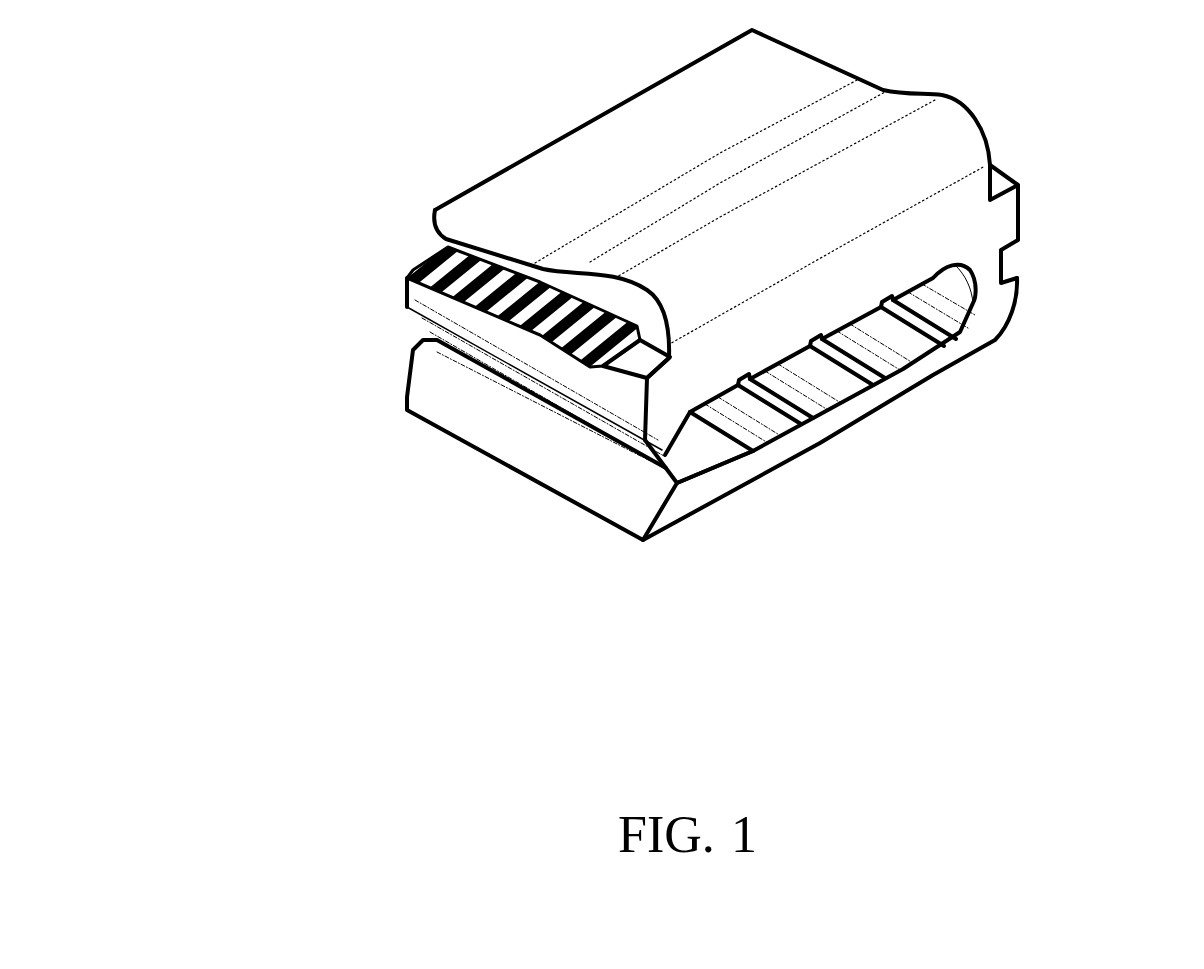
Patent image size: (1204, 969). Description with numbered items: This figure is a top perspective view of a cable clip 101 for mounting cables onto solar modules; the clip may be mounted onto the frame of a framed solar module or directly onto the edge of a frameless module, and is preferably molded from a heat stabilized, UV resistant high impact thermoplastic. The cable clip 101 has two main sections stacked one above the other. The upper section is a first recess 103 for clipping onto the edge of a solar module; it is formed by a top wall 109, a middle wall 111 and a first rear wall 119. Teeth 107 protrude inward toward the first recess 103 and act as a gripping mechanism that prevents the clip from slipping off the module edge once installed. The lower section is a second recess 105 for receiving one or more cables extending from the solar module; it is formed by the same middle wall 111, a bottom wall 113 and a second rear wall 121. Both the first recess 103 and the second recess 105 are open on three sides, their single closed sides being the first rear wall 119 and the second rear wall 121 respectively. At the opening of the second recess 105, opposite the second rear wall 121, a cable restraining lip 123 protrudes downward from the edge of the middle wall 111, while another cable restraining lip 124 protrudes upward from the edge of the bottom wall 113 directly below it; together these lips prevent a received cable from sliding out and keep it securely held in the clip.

The cable clip 101 is at (314, 570).
The first recess 103 is at (415, 248).
The second recess 105 is at (946, 311).
The teeth 107 is at (495, 303).
The top wall 109 is at (696, 165).
The middle wall 111 is at (612, 393).
The bottom wall 113 is at (778, 455).
The first rear wall 119 is at (650, 332).
The second rear wall 121 is at (982, 276).
The cable restraining lip 123 is at (663, 438).
The cable restraining lip 124 is at (670, 493).